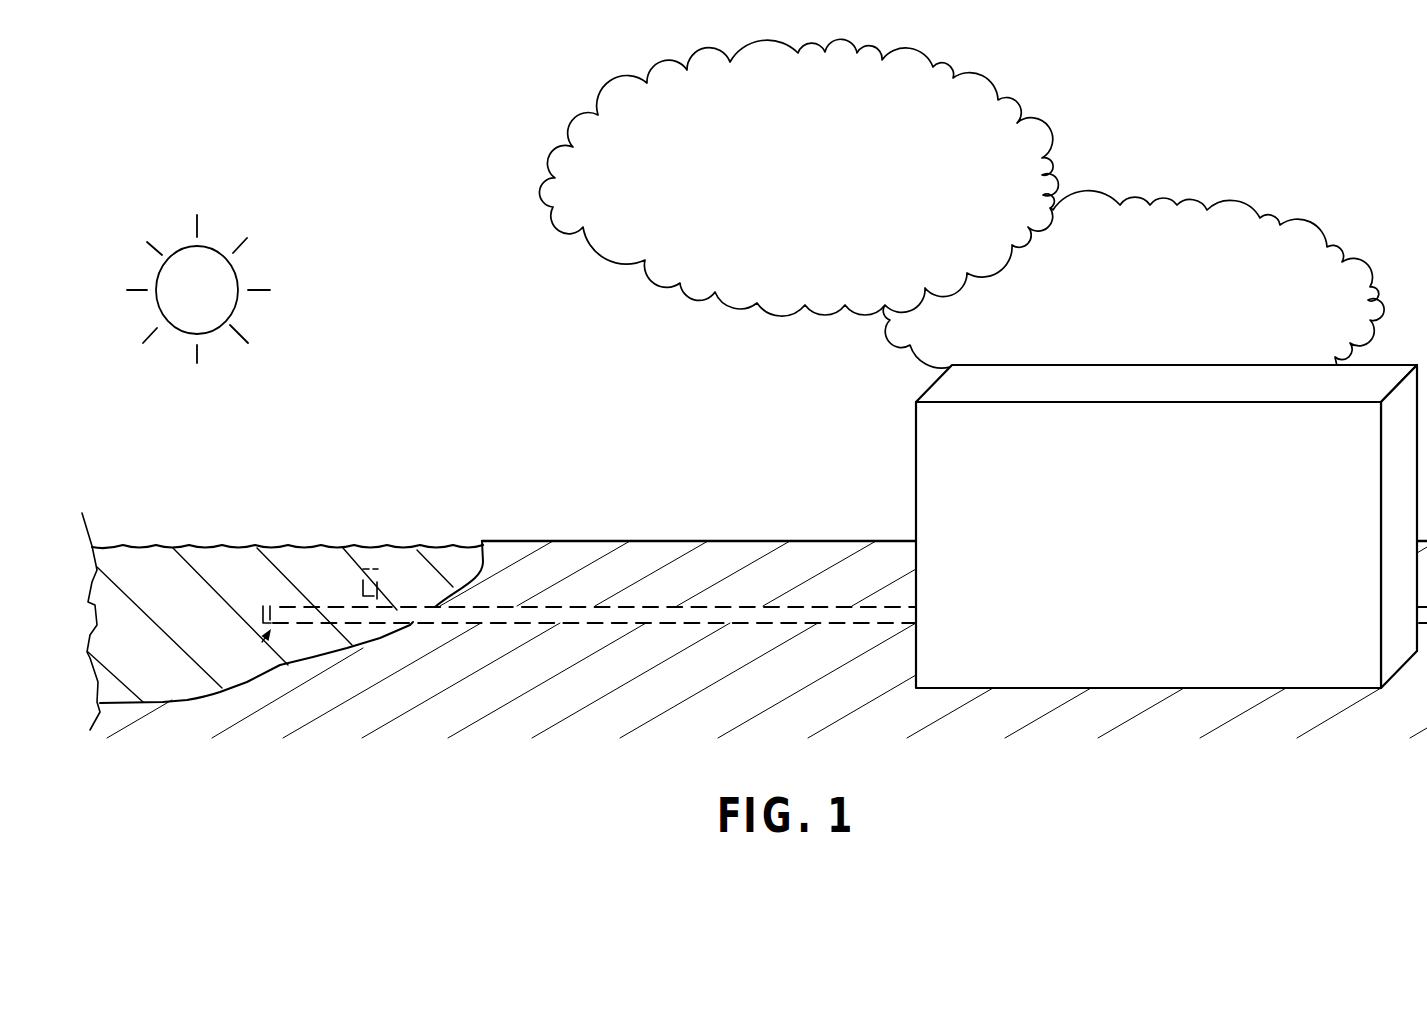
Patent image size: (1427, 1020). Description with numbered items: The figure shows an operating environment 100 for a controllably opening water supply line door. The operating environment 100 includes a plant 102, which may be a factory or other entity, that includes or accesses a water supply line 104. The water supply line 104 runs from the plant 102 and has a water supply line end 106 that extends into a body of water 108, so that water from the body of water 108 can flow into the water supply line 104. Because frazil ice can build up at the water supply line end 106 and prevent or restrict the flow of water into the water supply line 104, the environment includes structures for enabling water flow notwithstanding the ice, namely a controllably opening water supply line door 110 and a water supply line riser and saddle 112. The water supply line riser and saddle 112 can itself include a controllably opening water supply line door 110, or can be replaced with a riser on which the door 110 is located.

The operating environment 100 is at (221, 123).
The plant 102 is at (1295, 675).
The water supply line 104 is at (720, 617).
The water supply line end 106 is at (262, 642).
The body of water 108 is at (197, 678).
The controllably opening water supply line door 110 is at (262, 617).
The water supply line riser and saddle 112 is at (362, 590).